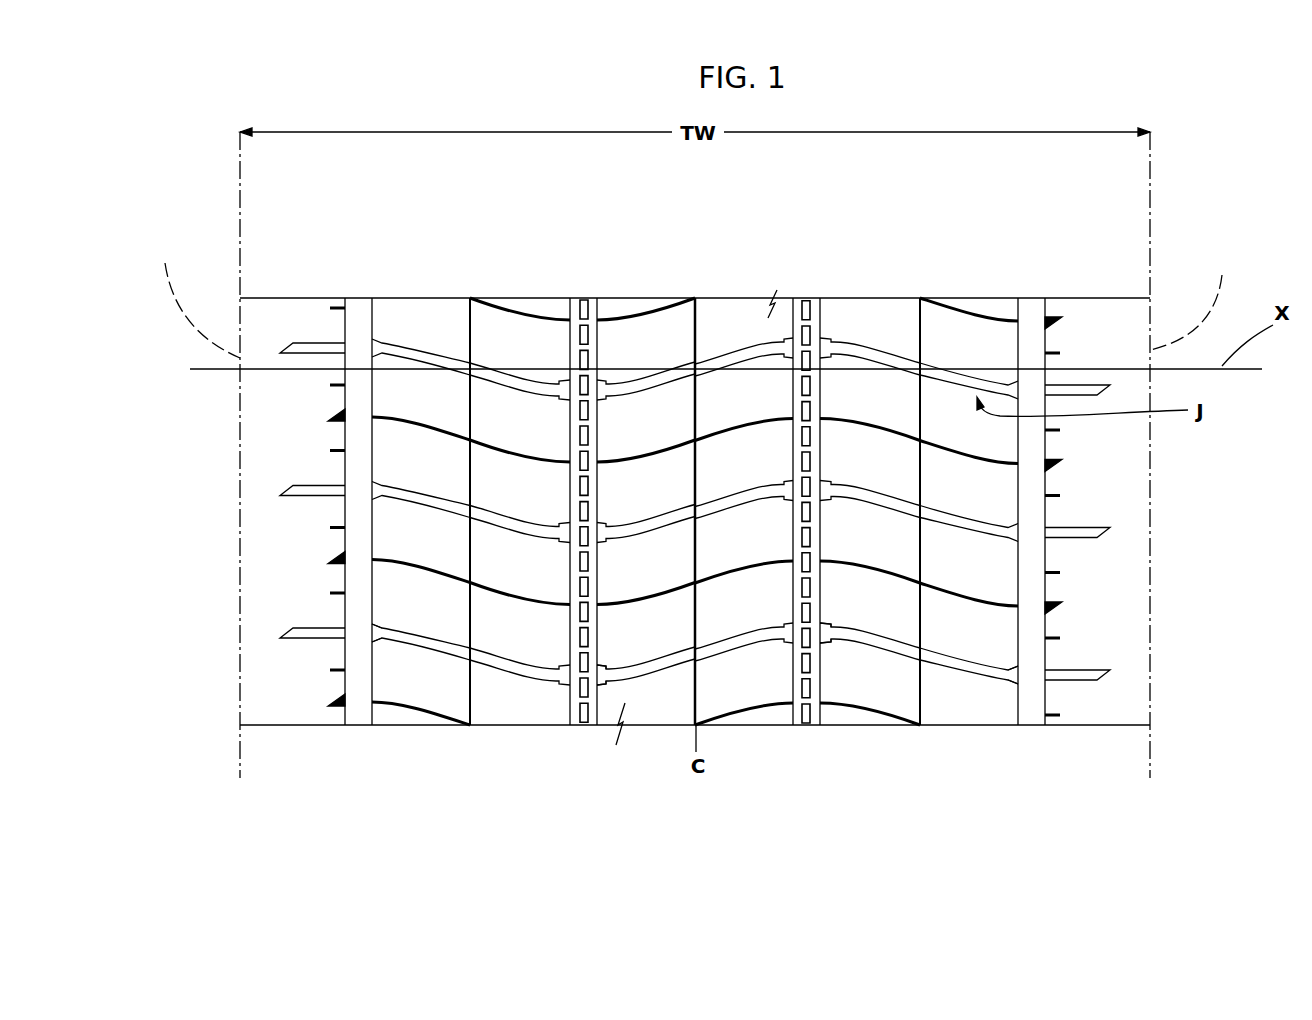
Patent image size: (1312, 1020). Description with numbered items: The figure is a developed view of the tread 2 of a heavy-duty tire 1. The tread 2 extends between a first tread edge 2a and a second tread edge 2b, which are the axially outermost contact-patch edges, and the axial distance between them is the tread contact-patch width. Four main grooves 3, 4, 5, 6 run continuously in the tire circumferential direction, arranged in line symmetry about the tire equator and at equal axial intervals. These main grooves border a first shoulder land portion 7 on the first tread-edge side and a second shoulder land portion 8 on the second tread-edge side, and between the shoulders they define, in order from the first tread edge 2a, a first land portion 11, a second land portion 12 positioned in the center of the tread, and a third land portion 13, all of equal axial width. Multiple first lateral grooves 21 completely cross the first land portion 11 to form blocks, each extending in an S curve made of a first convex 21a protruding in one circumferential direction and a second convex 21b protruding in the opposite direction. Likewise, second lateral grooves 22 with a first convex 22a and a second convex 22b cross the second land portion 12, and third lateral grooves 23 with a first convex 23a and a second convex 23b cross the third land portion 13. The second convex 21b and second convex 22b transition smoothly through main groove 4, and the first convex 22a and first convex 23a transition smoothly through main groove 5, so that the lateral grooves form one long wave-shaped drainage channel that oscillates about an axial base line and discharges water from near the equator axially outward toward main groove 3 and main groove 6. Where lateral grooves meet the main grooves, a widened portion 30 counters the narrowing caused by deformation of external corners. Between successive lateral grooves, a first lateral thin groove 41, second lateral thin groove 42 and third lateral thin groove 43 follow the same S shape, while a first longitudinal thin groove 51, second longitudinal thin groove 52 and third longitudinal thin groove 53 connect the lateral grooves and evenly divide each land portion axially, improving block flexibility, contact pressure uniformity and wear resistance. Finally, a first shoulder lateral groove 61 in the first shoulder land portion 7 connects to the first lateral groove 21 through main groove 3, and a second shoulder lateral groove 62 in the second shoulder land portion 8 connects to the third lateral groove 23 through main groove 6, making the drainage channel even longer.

The heavy-duty tire 1 is at (1178, 230).
The tread 2 is at (1070, 205).
The first tread edge 2a is at (194, 298).
The second tread edge 2b is at (1196, 298).
The main groove 3 is at (357, 322).
The main groove 4 is at (584, 322).
The main groove 5 is at (806, 322).
The main groove 6 is at (1032, 322).
The first shoulder land portion 7 is at (287, 704).
The second shoulder land portion 8 is at (1101, 703).
The first land portion 11 is at (470, 728).
The second land portion 12 is at (685, 727).
The third land portion 13 is at (912, 728).
The first lateral groove 21 is at (371, 436).
The first convex 21a is at (417, 350).
The second convex 21b is at (525, 382).
The second lateral groove 22 is at (695, 482).
The first convex 22a is at (744, 451).
The second convex 22b is at (644, 380).
The third lateral groove 23 is at (1022, 435).
The first convex 23a is at (872, 347).
The second convex 23b is at (975, 380).
The widened portion 30 is at (377, 634).
The first lateral thin groove 41 is at (457, 577).
The second lateral thin groove 42 is at (700, 545).
The third lateral thin groove 43 is at (950, 595).
The first longitudinal thin groove 51 is at (483, 620).
The second longitudinal thin groove 52 is at (694, 695).
The third longitudinal thin groove 53 is at (922, 548).
The first shoulder lateral groove 61 is at (313, 349).
The second shoulder lateral groove 62 is at (1077, 385).